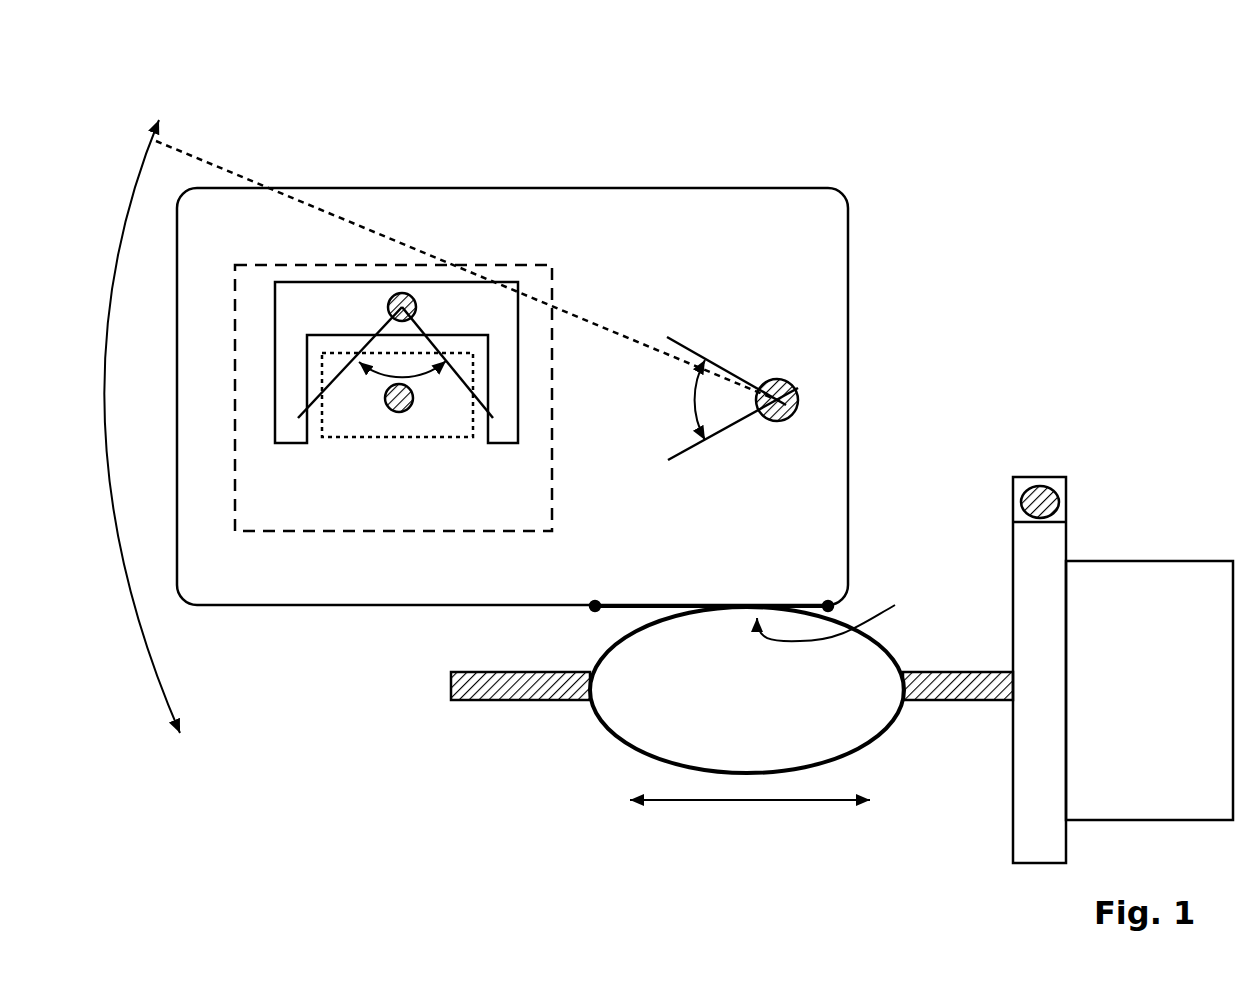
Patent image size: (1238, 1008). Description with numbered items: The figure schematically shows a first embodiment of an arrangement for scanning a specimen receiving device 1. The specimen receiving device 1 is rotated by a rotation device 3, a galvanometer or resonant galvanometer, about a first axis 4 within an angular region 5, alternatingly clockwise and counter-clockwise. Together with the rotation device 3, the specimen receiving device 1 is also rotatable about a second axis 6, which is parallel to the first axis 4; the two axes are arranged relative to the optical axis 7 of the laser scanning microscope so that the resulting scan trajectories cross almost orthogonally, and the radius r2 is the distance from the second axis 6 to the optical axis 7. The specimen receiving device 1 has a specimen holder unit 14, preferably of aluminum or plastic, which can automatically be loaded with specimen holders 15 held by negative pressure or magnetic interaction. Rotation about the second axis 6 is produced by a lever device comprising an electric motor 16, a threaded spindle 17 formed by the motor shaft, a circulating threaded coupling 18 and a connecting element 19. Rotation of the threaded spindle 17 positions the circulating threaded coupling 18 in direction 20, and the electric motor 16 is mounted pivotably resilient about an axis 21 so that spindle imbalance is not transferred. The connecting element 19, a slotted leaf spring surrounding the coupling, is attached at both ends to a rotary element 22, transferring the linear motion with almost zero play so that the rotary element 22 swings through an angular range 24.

The specimen receiving device 1 is at (536, 286).
The rotation device 3 is at (338, 500).
The first axis 4 is at (401, 292).
The angular region 5 is at (410, 341).
The second axis 6 is at (797, 392).
The optical axis 7 is at (401, 413).
The specimen holder unit 14 is at (468, 312).
The specimen holder 15 is at (332, 425).
The electric motor 16 is at (1173, 721).
The threaded spindle 17 is at (535, 690).
The circulating threaded coupling 18 is at (822, 727).
The connecting element 19 is at (893, 660).
The direction 20 is at (723, 803).
The axis 21 is at (1040, 485).
The rotary element 22 is at (451, 577).
The angular range 24 is at (718, 412).
The radius of second axis r2 is at (218, 163).